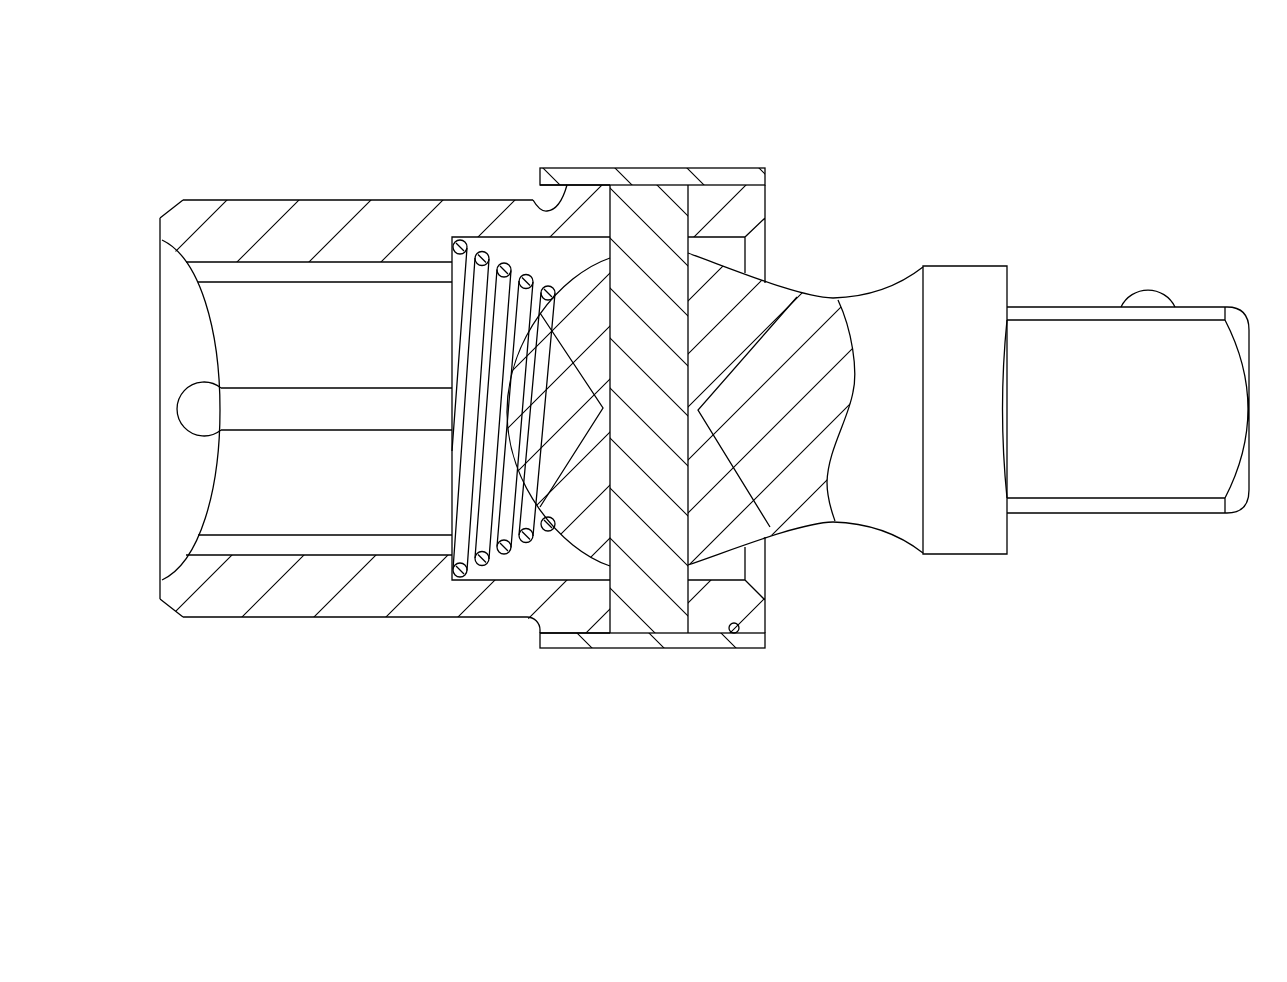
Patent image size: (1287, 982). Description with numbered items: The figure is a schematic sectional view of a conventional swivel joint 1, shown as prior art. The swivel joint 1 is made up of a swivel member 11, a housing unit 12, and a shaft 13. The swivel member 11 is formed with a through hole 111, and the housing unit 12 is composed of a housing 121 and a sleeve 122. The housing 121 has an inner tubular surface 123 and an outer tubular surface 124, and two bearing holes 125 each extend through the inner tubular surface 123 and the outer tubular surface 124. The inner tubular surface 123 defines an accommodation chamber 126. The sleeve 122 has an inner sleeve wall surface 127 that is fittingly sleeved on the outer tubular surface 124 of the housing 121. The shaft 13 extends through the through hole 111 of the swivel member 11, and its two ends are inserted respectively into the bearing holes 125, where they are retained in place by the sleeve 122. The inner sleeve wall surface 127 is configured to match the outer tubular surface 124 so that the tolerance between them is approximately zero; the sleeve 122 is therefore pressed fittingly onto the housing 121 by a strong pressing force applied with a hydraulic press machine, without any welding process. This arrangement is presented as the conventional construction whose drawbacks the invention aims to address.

The swivel joint 1 is at (202, 170).
The swivel member 11 is at (968, 266).
The through hole 111 is at (738, 289).
The housing unit 12 is at (508, 178).
The housing 121 is at (288, 200).
The sleeve 122 is at (683, 168).
The inner tubular surface 123 is at (500, 252).
The outer tubular surface 124 is at (539, 190).
The bearing holes 125 is at (564, 187).
The accommodation chamber 126 is at (522, 568).
The inner sleeve wall surface 127 is at (737, 632).
The shaft 13 is at (672, 212).